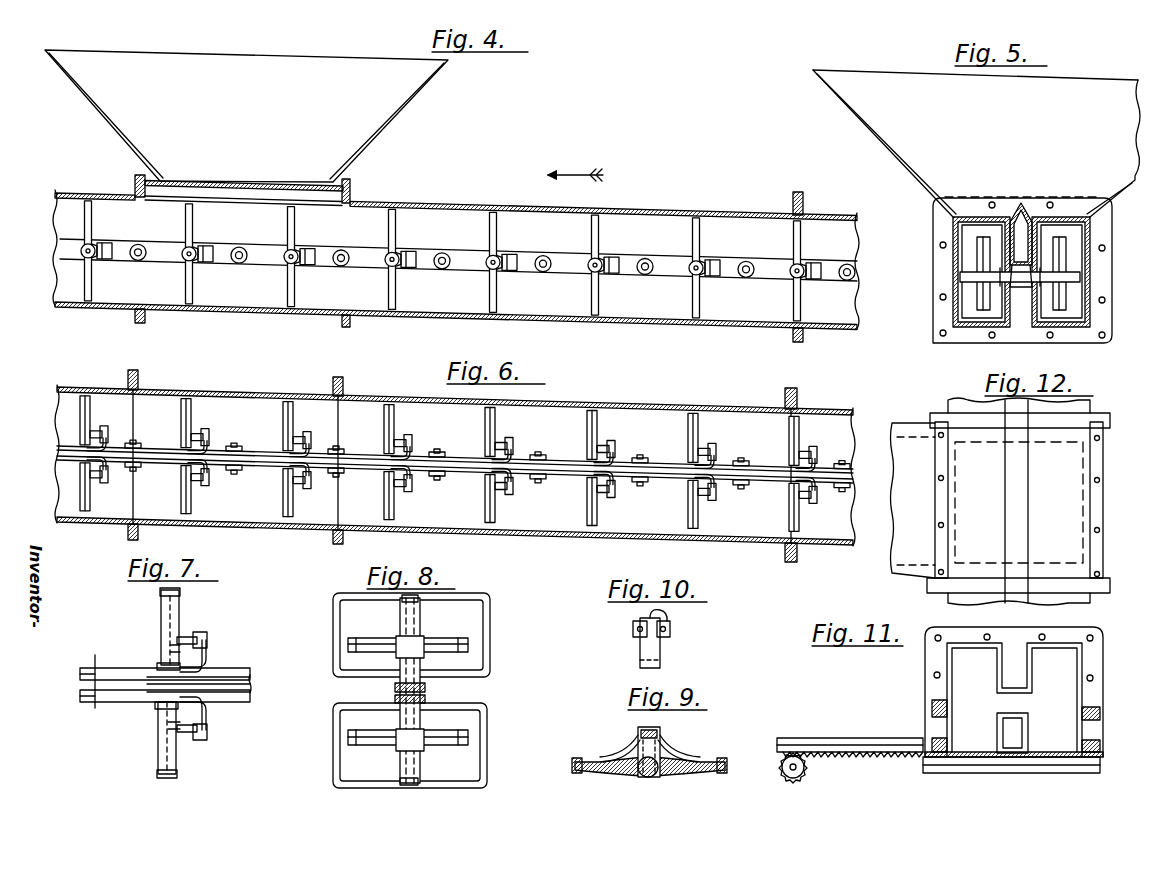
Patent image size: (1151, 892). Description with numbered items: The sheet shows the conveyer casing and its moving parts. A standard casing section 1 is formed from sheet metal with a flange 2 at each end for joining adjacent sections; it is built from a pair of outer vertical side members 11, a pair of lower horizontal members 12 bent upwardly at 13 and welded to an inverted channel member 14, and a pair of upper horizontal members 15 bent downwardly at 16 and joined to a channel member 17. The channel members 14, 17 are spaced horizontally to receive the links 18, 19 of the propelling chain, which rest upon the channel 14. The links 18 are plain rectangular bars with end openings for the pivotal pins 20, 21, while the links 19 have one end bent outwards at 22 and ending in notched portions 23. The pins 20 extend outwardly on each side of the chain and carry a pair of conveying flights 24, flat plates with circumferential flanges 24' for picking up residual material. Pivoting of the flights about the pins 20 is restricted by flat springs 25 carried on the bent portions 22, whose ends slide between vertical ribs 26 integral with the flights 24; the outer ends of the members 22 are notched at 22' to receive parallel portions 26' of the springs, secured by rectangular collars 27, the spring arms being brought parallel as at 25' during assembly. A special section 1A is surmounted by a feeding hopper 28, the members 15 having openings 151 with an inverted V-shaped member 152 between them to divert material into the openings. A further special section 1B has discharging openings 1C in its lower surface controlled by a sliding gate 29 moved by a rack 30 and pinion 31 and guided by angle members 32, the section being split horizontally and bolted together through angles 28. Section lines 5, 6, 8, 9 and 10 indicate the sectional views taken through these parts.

In FIG. 4, the casing section 1 is at (75, 193).
In FIG. 6, the casing section 1 is at (620, 406).
In FIG. 4, the special casing section 1A is at (222, 308).
In FIG. 6, the special casing section 1A is at (222, 398).
In FIG. 12, the special casing section with discharge openings 1B is at (910, 450).
In FIG. 11, the discharging openings 1C is at (972, 745).
In FIG. 4, the flange 2 is at (352, 190).
In FIG. 4, the section line 5— 5 is at (240, 78).
In FIG. 4, the section line 6— 6 is at (35, 217).
In FIG. 5, the section line 6— 6 is at (883, 240).
In FIG. 7, the section line 8— 8 is at (228, 583).
In FIG. 8, the section line 9— 9 is at (303, 625).
In FIG. 9, the section line 10— 10 is at (580, 737).
In FIG. 5, the outer vertical side members 11 is at (950, 235).
In FIG. 4, the lower horizontal members 12 is at (438, 312).
In FIG. 5, the lower horizontal members 12 is at (975, 330).
In FIG. 5, the upwardly bent portions 13 is at (1000, 305).
In FIG. 5, the inverted channel member 14 is at (1021, 290).
In FIG. 11, the inverted channel member 14 is at (1025, 715).
In FIG. 4, the upper horizontal members 15 is at (432, 206).
In FIG. 11, the upper horizontal members 15 is at (962, 643).
In FIG. 5, the downwardly bent portions 16 is at (1035, 237).
In FIG. 11, the downwardly bent portions 16 is at (1000, 668).
In FIG. 5, the channel member 17 is at (1023, 242).
In FIG. 11, the channel member 17 is at (1030, 696).
In FIG. 4, the chain links 18 is at (220, 247).
In FIG. 6, the chain links 18 is at (150, 450).
In FIG. 7, the chain links 18 is at (235, 677).
In FIG. 4, the chain links 19 is at (372, 248).
In FIG. 6, the chain links 19 is at (355, 468).
In FIG. 7, the chain links 19 is at (126, 672).
In FIG. 4, the pivotal pins 20 is at (185, 258).
In FIG. 7, the pivotal pins 20 is at (160, 616).
In FIG. 8, the pivotal pins 20 is at (420, 620).
In FIG. 9, the pivotal pins 20 is at (640, 770).
In FIG. 4, the pivotal pins 21 is at (245, 262).
In FIG. 6, the pivotal pins 21 is at (236, 472).
In FIG. 7, the outwardly bent portions 22 is at (208, 685).
In FIG. 10, the outwardly bent portions 22 is at (667, 645).
In FIG. 10, the notches 22' is at (683, 633).
In FIG. 7, the notched portions 23 is at (207, 636).
In FIG. 10, the notched portions 23 is at (633, 632).
In FIG. 6, the conveying flights 24 is at (448, 464).
In FIG. 8, the conveying flights 24 is at (427, 690).
In FIG. 9, the conveying flights 24 is at (659, 780).
In FIG. 8, the circumferential flanges 24' is at (505, 724).
In FIG. 7, the flat springs 25 is at (192, 689).
In FIG. 8, the flat springs 25 is at (451, 691).
In FIG. 10, the flat springs 25 is at (699, 650).
In FIG. 9, the flat springs 25 is at (651, 739).
In FIG. 9, the parallel spring arms 25' is at (669, 779).
In FIG. 8, the vertical ribs 26 is at (382, 677).
In FIG. 9, the vertical ribs 26 is at (716, 728).
In FIG. 9, the parallel portions of the springs 26' is at (668, 717).
In FIG. 7, the rectangular collars 27 is at (175, 652).
In FIG. 8, the rectangular collars 27 is at (400, 636).
In FIG. 10, the rectangular collars 27 is at (665, 621).
In FIG. 9, the rectangular collars 27 is at (640, 730).
In FIG. 4, the feeding hopper / connecting angles 28 is at (375, 140).
In FIG. 5, the feeding hopper / connecting angles 28 is at (858, 120).
In FIG. 11, the feeding hopper / connecting angles 28 is at (932, 708).
In FIG. 12, the feeding hopper / connecting angles 28 is at (935, 503).
In FIG. 11, the sliding gate 29 is at (955, 760).
In FIG. 11, the rack 30 is at (858, 760).
In FIG. 11, the pinion 31 is at (806, 771).
In FIG. 11, the angle members 32 is at (818, 740).
In FIG. 4, the openings 151 is at (262, 201).
In FIG. 5, the openings 151 is at (982, 215).
In FIG. 4, the inverted V-shaped member 152 is at (250, 182).
In FIG. 5, the inverted V-shaped member 152 is at (1022, 203).